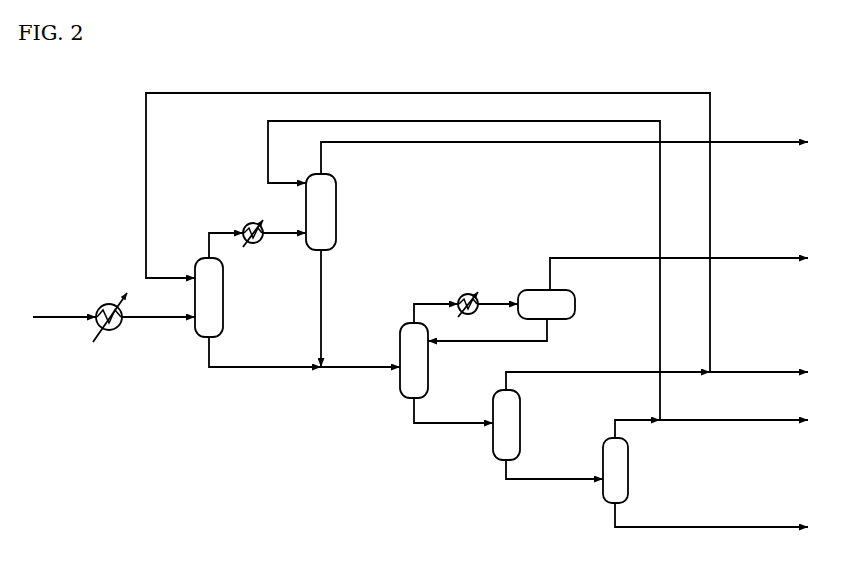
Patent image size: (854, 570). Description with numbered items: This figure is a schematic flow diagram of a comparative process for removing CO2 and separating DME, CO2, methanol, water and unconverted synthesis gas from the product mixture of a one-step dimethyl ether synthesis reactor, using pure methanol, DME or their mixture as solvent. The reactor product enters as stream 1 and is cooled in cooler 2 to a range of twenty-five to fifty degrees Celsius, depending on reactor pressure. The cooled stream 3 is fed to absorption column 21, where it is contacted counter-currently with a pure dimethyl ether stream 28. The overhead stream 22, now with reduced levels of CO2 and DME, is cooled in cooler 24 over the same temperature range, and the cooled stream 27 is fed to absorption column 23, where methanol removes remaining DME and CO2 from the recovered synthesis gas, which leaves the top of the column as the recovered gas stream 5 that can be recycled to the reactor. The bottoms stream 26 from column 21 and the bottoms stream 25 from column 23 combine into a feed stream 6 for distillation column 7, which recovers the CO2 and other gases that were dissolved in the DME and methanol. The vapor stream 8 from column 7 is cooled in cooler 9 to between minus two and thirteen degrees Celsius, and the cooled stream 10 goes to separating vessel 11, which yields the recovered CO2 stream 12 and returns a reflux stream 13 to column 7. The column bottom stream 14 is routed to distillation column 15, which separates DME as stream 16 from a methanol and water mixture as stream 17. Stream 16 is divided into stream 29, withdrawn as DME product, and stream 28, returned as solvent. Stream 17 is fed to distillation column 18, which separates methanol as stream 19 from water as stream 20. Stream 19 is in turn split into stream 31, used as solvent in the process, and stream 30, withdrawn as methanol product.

The stream 1 is at (45, 315).
The cooler 2 is at (110, 319).
The cooled stream 3 is at (145, 320).
The overhead product stream 5 is at (733, 140).
The combined bottoms stream 6 is at (345, 365).
The distillation column 7 is at (430, 377).
The vapor stream 8 is at (436, 302).
The cooler 9 is at (468, 312).
The cooled stream 10 is at (487, 308).
The separating vessel 11 is at (580, 301).
The CO2 stream 12 is at (613, 256).
The reflux stream 13 is at (465, 344).
The bottom stream 14 is at (443, 421).
The distillation column 15 is at (524, 414).
The stream 16 is at (585, 370).
The stream 17 is at (540, 477).
The distillation column 18 is at (630, 467).
The stream 19 is at (636, 418).
The stream 20 is at (688, 525).
The absorption column 21 is at (226, 290).
The stream 22 is at (226, 230).
The absorption column 23 is at (338, 198).
The cooler 24 is at (253, 239).
The stream 25 is at (323, 298).
The stream 26 is at (255, 365).
The cooled stream 27 is at (270, 238).
The stream 28 is at (383, 91).
The stream 29 is at (733, 370).
The stream 30 is at (712, 418).
The stream 31 is at (475, 121).